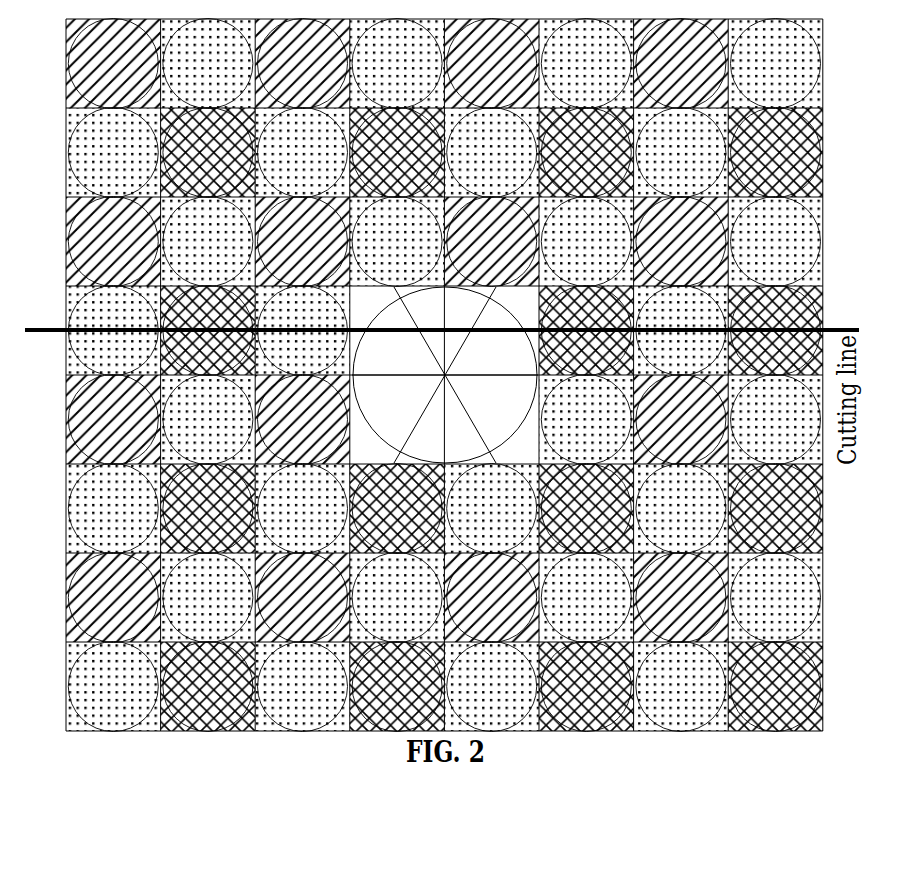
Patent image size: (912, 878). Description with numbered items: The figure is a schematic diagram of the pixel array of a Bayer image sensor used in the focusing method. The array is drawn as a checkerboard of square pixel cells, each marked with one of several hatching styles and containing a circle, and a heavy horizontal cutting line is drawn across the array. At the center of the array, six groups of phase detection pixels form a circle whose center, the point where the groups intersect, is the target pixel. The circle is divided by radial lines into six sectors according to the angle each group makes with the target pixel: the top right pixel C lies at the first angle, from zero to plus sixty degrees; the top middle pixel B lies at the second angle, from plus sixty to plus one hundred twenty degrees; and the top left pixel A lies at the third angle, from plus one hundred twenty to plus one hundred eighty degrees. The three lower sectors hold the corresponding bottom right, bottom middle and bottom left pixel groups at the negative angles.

The top left pixel A is at (382, 337).
The top middle pixel B is at (445, 307).
The top right pixel C is at (510, 337).